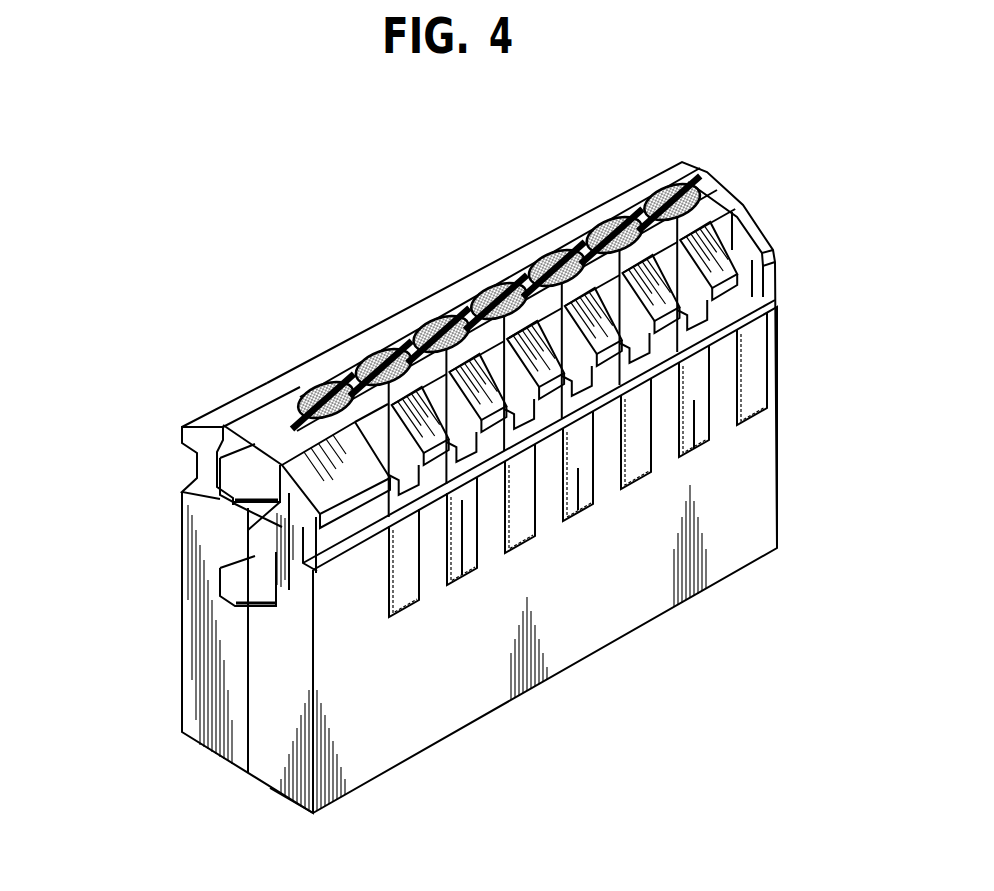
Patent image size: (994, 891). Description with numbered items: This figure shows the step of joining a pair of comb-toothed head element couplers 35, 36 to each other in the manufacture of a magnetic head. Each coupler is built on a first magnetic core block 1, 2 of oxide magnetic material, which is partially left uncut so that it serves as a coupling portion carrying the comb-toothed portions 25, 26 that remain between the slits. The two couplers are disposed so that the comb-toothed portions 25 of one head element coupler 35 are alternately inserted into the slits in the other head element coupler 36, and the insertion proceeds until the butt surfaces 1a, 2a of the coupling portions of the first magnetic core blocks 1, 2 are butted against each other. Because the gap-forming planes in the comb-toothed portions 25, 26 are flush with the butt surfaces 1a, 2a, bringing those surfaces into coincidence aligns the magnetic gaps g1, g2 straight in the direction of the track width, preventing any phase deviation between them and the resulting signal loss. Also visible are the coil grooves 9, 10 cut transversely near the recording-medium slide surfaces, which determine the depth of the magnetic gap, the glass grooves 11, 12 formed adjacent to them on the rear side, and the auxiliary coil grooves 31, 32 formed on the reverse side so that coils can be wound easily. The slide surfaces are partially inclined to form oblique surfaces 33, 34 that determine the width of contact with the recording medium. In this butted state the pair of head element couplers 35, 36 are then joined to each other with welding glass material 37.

The first magnetic core block 1 is at (190, 663).
The first magnetic core block 2 is at (267, 763).
The butt surface 1a is at (245, 638).
The butt surface 2a is at (245, 638).
The coil groove 9 is at (202, 500).
The coil groove 10 is at (277, 497).
The glass groove 11 is at (212, 588).
The glass groove 12 is at (270, 600).
The comb-toothed portion 25 is at (282, 379).
The comb-toothed portion 26 is at (443, 415).
The auxiliary coil groove 31 is at (188, 470).
The auxiliary coil groove 32 is at (338, 550).
The oblique surface 33 is at (214, 417).
The oblique surface 34 is at (250, 518).
The head element coupler 35 is at (179, 698).
The head element coupler 36 is at (282, 795).
The welding glass material 37 is at (404, 614).
The magnetic gap g1 is at (312, 395).
The magnetic gap g2 is at (338, 388).